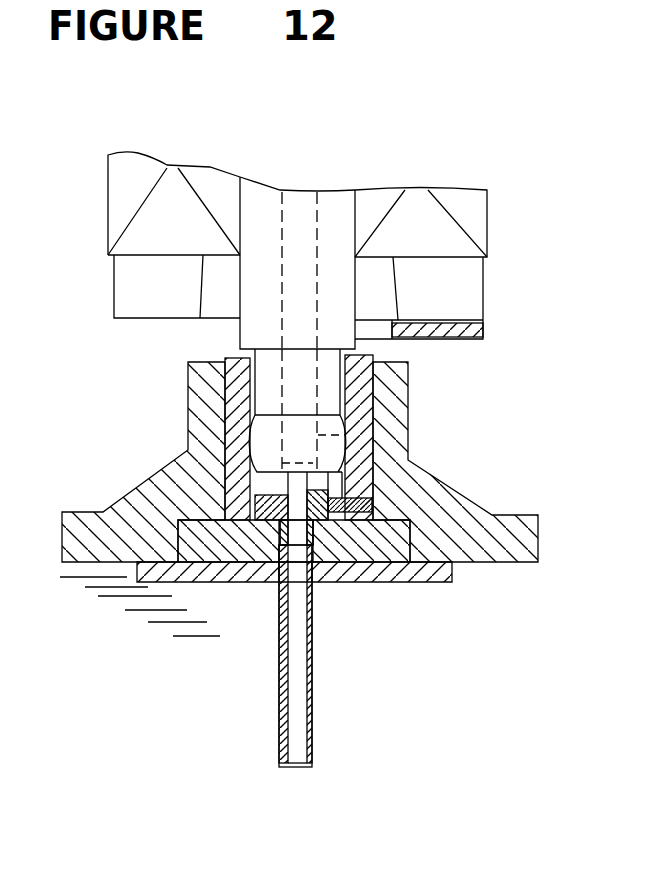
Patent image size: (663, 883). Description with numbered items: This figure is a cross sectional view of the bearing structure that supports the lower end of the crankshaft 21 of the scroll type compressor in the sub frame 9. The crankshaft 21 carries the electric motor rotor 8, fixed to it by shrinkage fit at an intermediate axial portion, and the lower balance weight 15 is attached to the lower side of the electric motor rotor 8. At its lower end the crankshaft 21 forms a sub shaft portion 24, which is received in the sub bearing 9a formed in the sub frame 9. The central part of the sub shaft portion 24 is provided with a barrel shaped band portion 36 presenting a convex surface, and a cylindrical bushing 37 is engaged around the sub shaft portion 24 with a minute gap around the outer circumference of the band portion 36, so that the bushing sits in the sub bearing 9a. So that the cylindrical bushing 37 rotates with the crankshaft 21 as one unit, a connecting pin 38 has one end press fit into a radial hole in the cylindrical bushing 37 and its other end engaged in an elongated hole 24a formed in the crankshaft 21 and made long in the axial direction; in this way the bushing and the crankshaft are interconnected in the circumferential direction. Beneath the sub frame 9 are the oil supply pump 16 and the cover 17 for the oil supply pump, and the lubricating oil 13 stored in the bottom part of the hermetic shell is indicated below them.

The electric motor rotor 8 is at (487, 236).
The sub frame 9 is at (452, 485).
The sub bearing 9a is at (203, 391).
The lubricating oil 13 is at (112, 603).
The lower balance weight 15 is at (478, 330).
The oil supply pump 16 is at (413, 580).
The cover for the oil supply pump 17 is at (356, 575).
The crankshaft 21 is at (263, 195).
The sub shaft portion 24 is at (322, 390).
The elongated hole 24a is at (328, 478).
The barrel shaped band portion 36 is at (265, 443).
The cylindrical bushing 37 is at (360, 405).
The connecting pin 38 is at (347, 500).